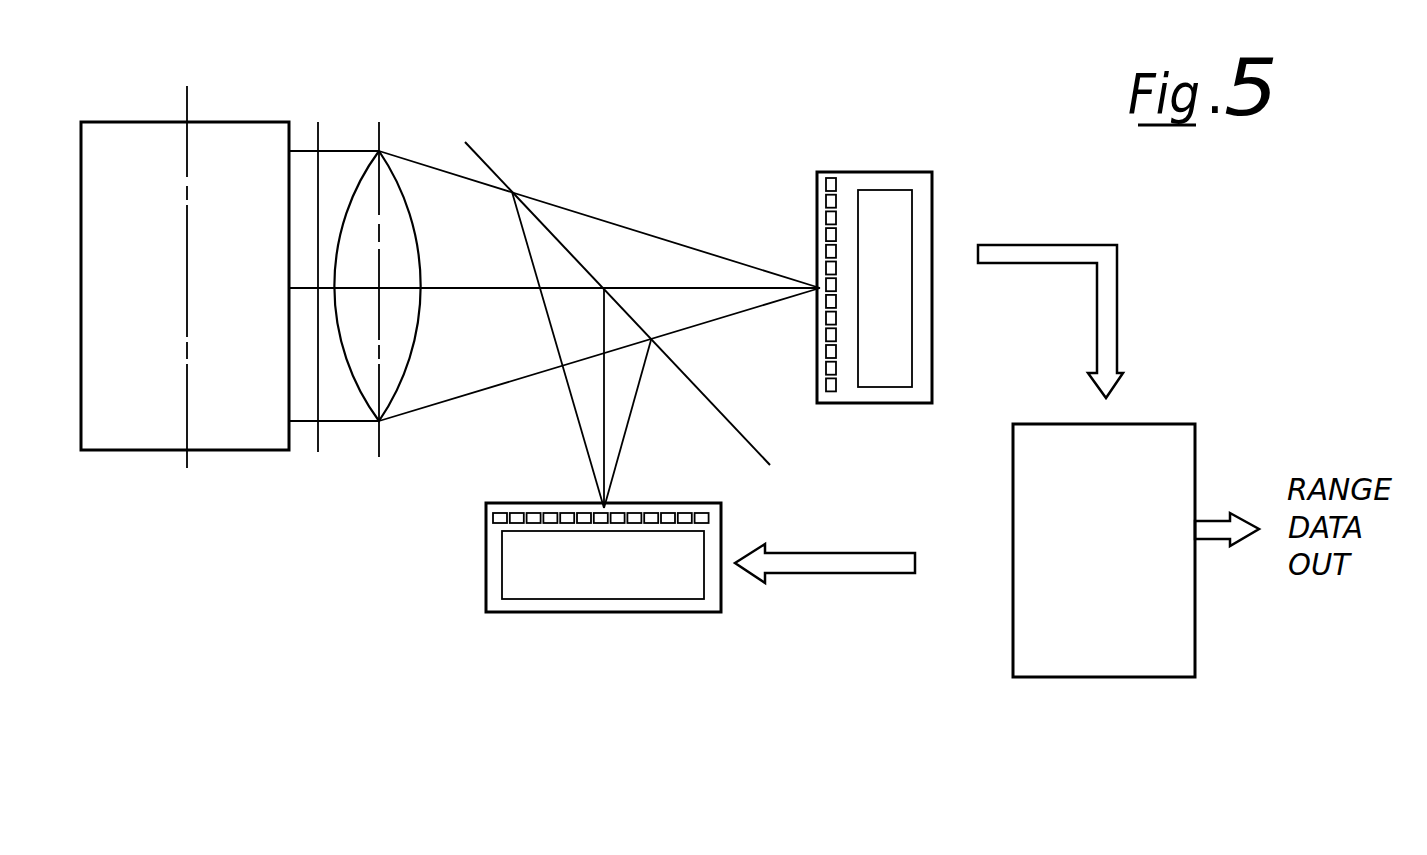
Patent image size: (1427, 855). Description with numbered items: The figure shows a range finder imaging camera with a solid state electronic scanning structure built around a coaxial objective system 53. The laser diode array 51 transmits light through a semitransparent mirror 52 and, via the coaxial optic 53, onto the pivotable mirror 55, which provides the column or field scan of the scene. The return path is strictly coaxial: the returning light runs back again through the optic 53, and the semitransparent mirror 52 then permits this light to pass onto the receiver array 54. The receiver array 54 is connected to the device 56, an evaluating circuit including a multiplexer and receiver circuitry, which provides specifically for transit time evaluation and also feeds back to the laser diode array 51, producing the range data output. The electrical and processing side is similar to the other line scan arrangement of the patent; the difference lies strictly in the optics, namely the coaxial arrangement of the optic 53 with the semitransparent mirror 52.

The laser diode array 51 is at (608, 583).
The semitransparent mirror 52 is at (502, 177).
The coaxial objective system 53 is at (388, 175).
The receiver array 54 is at (905, 220).
The pivotable mirror 55 is at (212, 122).
The evaluating circuit 56 is at (1118, 519).